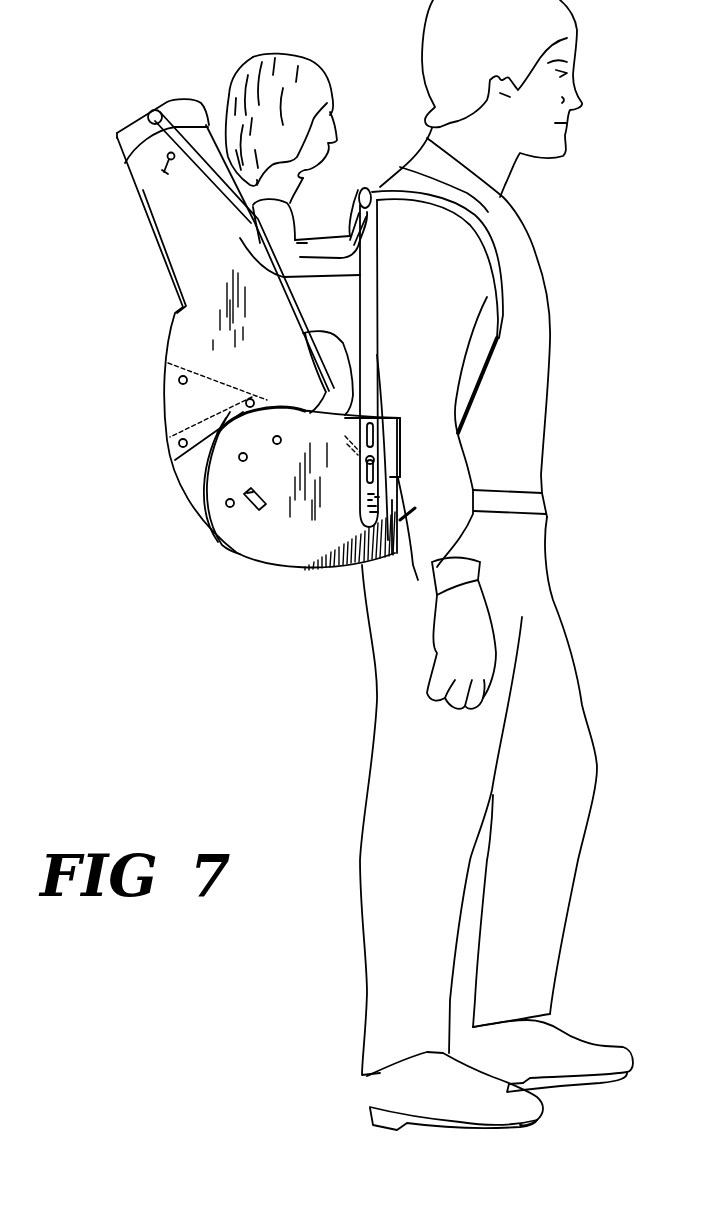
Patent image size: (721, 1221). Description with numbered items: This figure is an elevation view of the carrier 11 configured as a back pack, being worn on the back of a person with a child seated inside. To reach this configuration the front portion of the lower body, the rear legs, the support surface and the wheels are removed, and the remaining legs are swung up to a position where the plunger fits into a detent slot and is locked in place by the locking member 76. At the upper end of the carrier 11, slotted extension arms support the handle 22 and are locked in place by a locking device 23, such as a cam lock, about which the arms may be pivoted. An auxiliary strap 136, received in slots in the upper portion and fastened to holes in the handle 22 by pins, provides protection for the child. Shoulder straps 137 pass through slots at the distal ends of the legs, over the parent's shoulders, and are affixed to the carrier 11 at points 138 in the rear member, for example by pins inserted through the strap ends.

The carrier 11 is at (100, 248).
The handle 22 is at (135, 120).
The locking device 23 is at (161, 171).
The auxiliary strap 136 is at (203, 167).
The shoulder strap 137 is at (503, 322).
The locking member 76 is at (373, 473).
The points 138 is at (397, 540).